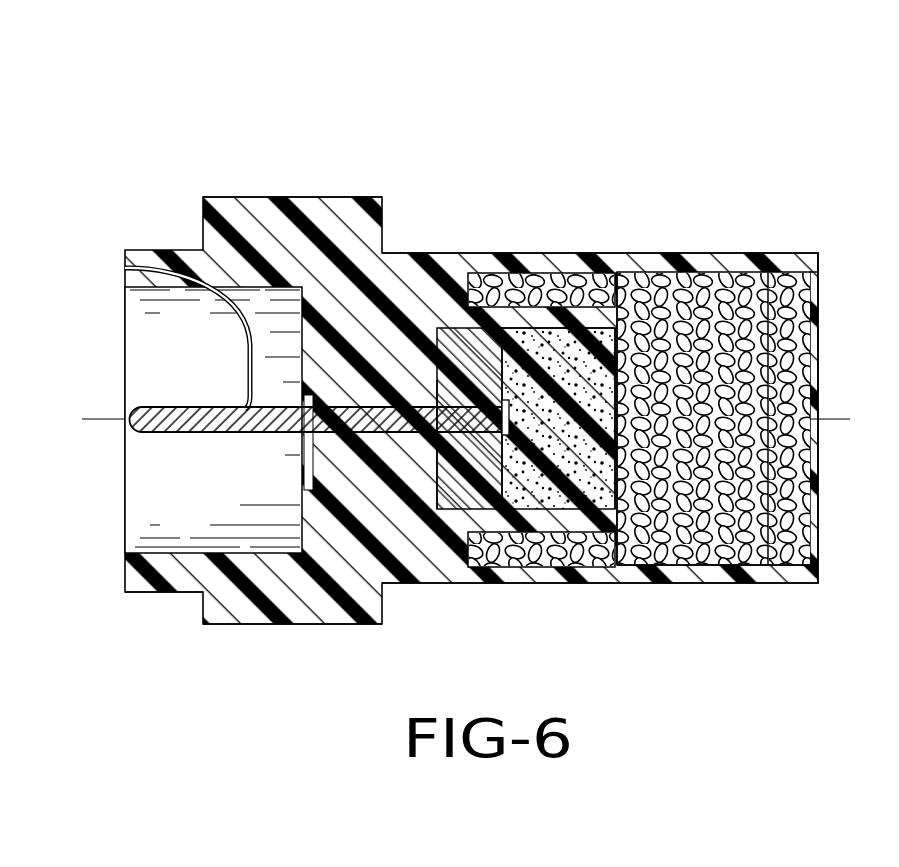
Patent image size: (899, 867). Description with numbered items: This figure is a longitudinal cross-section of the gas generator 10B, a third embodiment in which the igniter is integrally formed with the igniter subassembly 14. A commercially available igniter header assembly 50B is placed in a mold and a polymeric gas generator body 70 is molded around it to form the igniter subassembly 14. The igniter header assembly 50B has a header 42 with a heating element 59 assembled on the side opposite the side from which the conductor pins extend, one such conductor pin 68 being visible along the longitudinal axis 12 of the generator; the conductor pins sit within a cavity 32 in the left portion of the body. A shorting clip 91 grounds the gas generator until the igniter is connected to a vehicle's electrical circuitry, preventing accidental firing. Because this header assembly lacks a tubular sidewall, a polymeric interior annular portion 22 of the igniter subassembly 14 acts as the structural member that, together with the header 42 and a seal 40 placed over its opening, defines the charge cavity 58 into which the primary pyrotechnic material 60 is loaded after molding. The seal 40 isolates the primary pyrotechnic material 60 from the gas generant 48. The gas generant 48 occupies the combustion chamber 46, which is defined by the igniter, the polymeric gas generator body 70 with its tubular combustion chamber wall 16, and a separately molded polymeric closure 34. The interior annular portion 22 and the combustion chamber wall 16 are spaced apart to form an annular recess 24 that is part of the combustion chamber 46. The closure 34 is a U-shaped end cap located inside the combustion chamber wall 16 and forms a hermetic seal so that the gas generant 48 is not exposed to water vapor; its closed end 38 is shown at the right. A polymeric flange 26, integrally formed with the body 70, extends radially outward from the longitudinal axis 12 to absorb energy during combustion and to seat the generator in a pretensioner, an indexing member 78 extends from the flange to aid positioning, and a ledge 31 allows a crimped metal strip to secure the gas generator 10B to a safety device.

The gas generator 10B is at (430, 130).
The longitudinal axis 12 is at (145, 410).
The igniter subassembly 14 is at (228, 174).
The combustion chamber wall 16 is at (645, 253).
The polymeric interior annular portion 22 is at (578, 322).
The annular recess 24 is at (514, 288).
The polymeric flange 26 is at (305, 625).
The ledge 31 is at (155, 593).
The cavity 32 is at (125, 452).
The polymeric closure 34 is at (818, 292).
The closed end 38 is at (818, 540).
The seal 40 is at (613, 467).
The header 42 is at (468, 484).
The combustion chamber 46 is at (740, 308).
The gas generant 48 is at (705, 534).
The igniter header assembly 50B is at (426, 494).
The charge cavity 58 is at (585, 398).
The heating element 59 is at (508, 431).
The primary pyrotechnic material 60 is at (560, 473).
The conductor pin 68 is at (222, 436).
The polymeric gas generator body 70 is at (406, 292).
The indexing member 78 is at (280, 197).
The shorting clip 91 is at (245, 352).